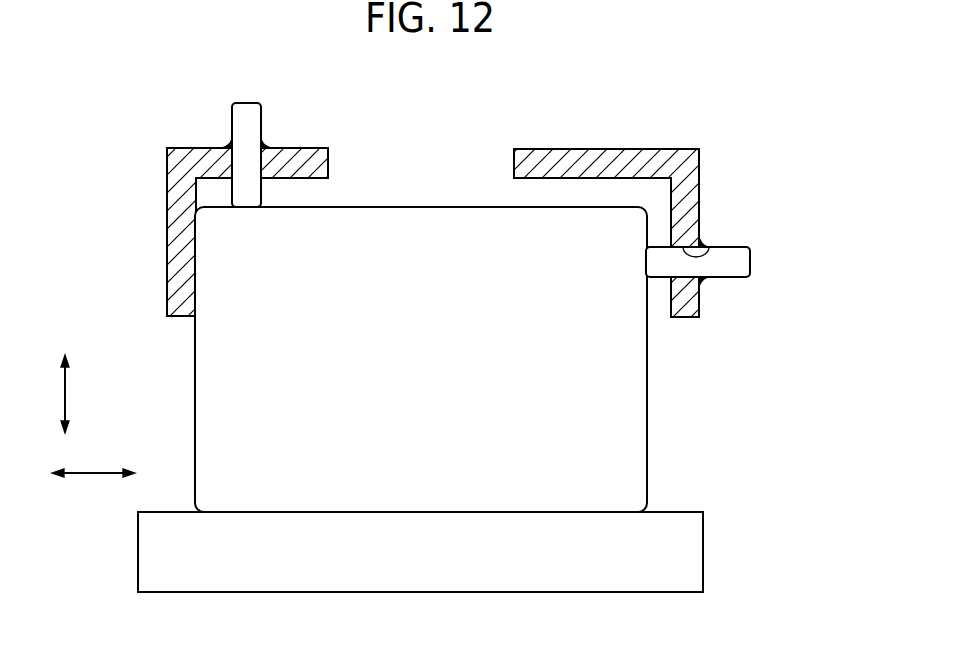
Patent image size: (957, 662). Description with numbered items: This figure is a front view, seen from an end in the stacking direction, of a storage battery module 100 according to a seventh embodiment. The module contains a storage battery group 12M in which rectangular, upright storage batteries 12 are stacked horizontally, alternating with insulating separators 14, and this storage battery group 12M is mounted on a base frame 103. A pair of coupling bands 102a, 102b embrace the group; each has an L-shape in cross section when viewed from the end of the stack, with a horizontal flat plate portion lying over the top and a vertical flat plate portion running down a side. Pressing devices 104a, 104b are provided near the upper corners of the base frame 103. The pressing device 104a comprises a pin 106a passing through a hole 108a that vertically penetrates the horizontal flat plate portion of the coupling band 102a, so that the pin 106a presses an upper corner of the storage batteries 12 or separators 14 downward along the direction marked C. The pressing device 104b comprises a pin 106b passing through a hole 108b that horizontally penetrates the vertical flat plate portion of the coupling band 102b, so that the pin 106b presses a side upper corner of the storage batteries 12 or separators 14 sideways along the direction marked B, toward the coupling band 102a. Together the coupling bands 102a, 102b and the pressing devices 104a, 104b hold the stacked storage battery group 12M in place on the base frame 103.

The storage battery module 100 is at (524, 83).
The coupling band 102a is at (154, 261).
The coupling band 102b is at (717, 306).
The pressing device 104a is at (246, 126).
The pressing device 104b is at (749, 236).
The pin 106a is at (246, 110).
The pin 106b is at (745, 260).
The hole 108a is at (261, 160).
The hole 108b is at (699, 256).
The storage battery group 12M is at (486, 359).
The storage battery 12 is at (462, 359).
The insulating separator 14 is at (628, 446).
The base frame 103 is at (693, 538).